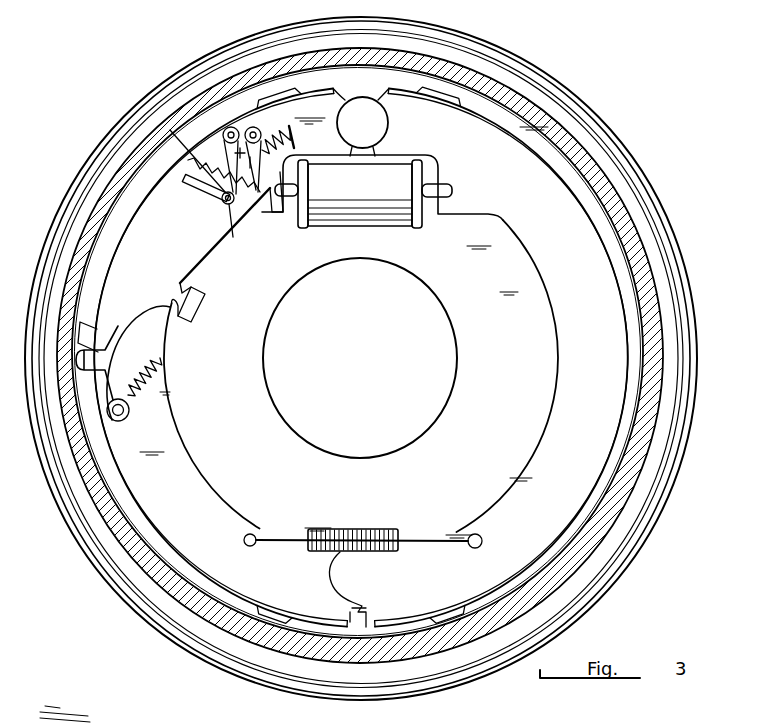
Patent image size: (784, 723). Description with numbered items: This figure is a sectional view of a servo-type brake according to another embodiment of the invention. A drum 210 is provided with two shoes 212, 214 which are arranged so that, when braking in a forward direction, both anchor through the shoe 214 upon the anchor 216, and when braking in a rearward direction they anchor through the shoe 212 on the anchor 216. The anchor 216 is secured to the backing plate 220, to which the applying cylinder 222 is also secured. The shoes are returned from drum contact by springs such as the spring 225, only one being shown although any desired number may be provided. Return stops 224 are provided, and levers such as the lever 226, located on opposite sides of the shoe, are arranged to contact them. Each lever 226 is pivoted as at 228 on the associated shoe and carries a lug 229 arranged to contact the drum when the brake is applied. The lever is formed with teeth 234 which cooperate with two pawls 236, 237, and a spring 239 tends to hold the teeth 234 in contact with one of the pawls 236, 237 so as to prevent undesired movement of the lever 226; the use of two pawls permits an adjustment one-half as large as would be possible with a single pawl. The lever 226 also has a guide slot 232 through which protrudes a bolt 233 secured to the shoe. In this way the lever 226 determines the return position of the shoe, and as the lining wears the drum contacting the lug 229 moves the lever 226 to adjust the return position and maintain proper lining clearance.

The drum 210 is at (98, 503).
The shoe 212 is at (283, 113).
The shoe 214 is at (382, 615).
The anchor 216 is at (372, 113).
The backing plate 220 is at (263, 357).
The applying cylinder 222 is at (378, 222).
The return stop 224 is at (198, 316).
The spring 225 is at (362, 532).
The lever 226 is at (163, 220).
The pivot 228 is at (130, 410).
The lug 229 is at (76, 360).
The guide slot 232 is at (199, 188).
The bolt 233 is at (233, 236).
The teeth 234 is at (207, 157).
The pawl 236 is at (268, 190).
The pawl 237 is at (200, 150).
The spring 239 is at (162, 378).